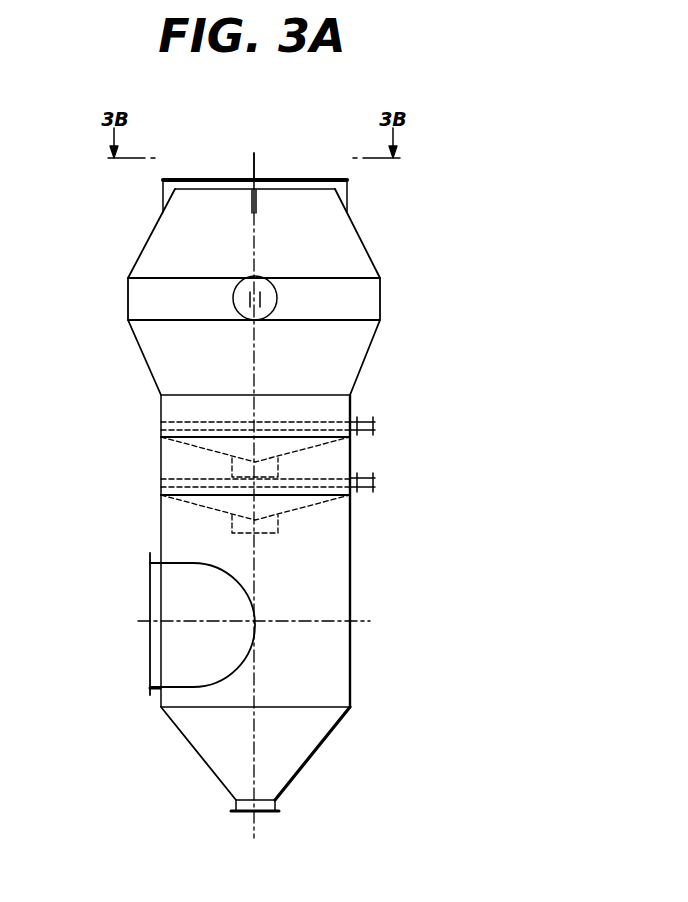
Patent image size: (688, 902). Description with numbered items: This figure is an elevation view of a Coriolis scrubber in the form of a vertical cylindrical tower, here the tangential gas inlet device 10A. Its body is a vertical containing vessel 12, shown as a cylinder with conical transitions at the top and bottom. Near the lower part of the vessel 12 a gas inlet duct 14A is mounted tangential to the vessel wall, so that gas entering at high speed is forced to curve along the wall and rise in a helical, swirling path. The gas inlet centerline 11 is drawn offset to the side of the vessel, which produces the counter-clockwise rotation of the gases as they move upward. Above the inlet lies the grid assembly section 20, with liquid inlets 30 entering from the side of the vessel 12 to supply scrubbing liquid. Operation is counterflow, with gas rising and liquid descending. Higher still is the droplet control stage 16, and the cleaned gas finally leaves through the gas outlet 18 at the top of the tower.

The tangential gas inlet device 10A is at (466, 255).
The gas inlet centerline 11 is at (370, 621).
The containing vessel 12 is at (161, 535).
The gas inlet duct 14A is at (150, 637).
The droplet control stage 16 is at (128, 292).
The gas outlet 18 is at (272, 178).
The grid assembly section 20 is at (196, 511).
The liquid inlet 30 is at (375, 426).